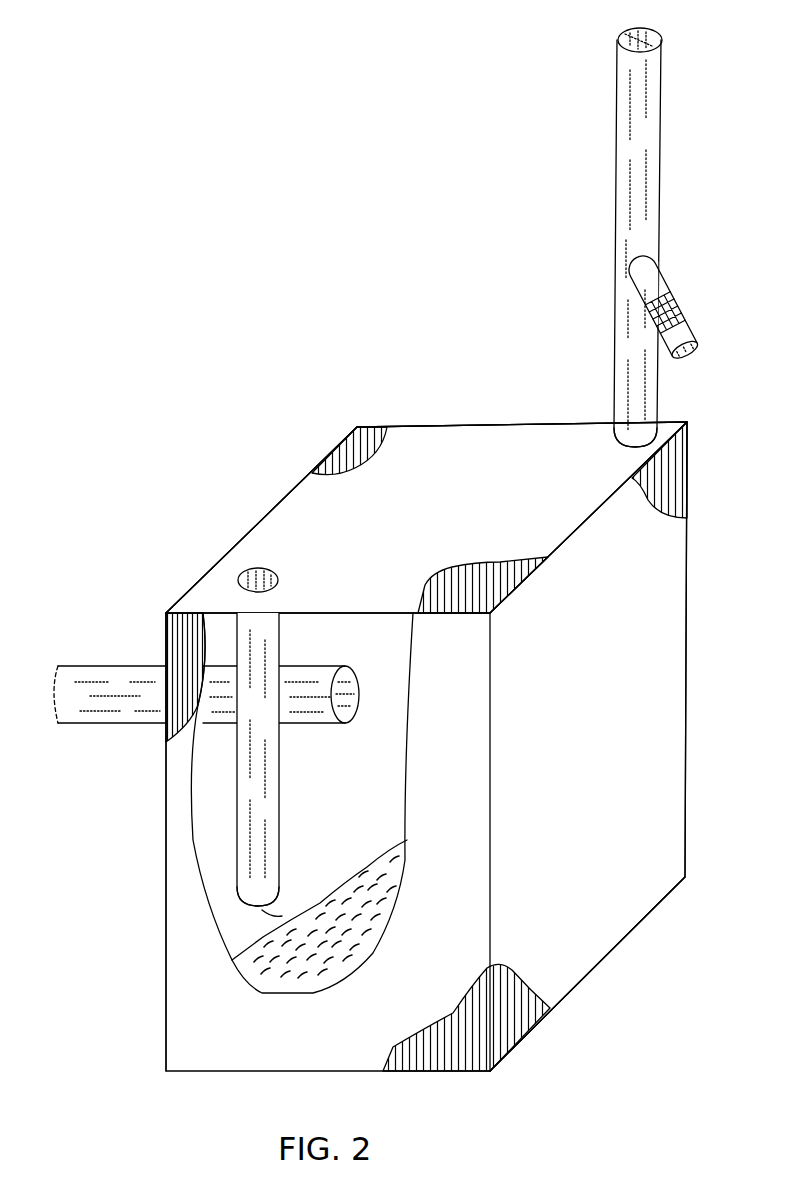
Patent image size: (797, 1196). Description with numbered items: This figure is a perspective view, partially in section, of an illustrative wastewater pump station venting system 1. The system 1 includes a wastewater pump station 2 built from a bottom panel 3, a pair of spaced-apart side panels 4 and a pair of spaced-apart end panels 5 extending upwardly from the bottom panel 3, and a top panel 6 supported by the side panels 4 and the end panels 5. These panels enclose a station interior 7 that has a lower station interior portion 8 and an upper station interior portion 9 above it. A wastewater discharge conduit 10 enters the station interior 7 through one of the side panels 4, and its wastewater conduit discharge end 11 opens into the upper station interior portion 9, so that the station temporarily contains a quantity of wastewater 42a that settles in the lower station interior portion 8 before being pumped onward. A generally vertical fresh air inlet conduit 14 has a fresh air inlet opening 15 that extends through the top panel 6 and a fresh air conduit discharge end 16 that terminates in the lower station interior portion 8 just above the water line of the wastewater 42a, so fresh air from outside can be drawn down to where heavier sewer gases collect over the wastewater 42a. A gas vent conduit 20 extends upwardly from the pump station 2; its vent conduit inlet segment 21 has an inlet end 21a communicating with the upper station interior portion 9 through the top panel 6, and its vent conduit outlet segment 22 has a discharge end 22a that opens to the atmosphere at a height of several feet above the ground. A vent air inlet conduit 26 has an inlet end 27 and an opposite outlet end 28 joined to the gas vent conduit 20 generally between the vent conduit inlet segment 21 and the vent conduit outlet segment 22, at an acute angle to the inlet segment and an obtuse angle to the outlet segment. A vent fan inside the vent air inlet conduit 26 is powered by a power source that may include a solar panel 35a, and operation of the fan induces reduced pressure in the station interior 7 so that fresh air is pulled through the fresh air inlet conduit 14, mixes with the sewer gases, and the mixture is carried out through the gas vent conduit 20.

The wastewater pump station venting system 1 is at (262, 305).
The wastewater pump station 2 is at (263, 510).
The bottom panel 3 is at (617, 943).
The side panels 4 is at (291, 487).
The end panels 5 is at (393, 427).
The top panel 6 is at (470, 445).
The station interior 7 is at (220, 757).
The lower station interior portion 8 is at (250, 927).
The upper station interior portion 9 is at (221, 638).
The wastewater discharge conduit 10 is at (116, 680).
The wastewater conduit discharge end 11 is at (356, 716).
The fresh air inlet conduit 14 is at (266, 805).
The fresh air inlet opening 15 is at (273, 572).
The fresh air conduit discharge end 16 is at (283, 900).
The gas vent conduit 20 is at (665, 259).
The vent conduit inlet segment 21 is at (626, 370).
The inlet end 21a is at (636, 458).
The vent conduit outlet segment 22 is at (618, 170).
The discharge end 22a is at (664, 32).
The vent air inlet conduit 26 is at (703, 309).
The inlet end 27 is at (699, 355).
The outlet end 28 is at (615, 288).
The solar panel 35a is at (672, 312).
The wastewater 42a is at (367, 873).